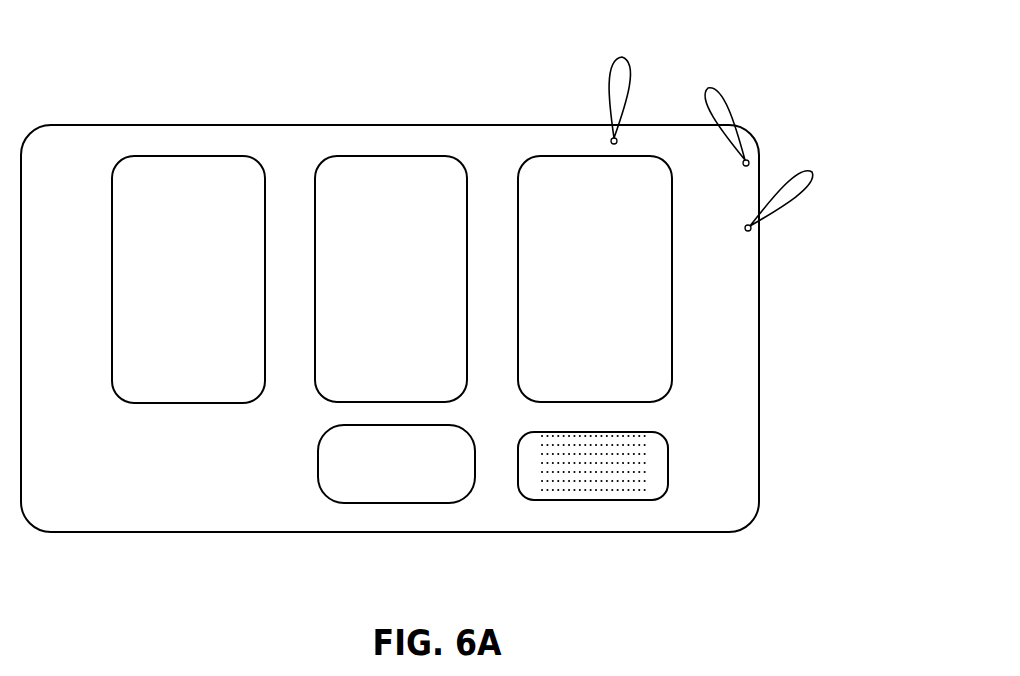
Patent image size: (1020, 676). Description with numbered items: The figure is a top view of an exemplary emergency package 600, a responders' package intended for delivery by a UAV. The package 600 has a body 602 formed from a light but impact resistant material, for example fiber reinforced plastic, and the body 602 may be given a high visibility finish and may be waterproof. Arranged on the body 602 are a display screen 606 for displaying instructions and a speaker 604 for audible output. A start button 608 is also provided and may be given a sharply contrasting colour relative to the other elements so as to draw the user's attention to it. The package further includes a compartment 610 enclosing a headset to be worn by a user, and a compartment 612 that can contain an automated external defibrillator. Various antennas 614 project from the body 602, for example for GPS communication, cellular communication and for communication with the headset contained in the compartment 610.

The emergency package 600 is at (469, 309).
The body 602 is at (390, 280).
The speaker 604 is at (588, 500).
The display screen 606 is at (225, 183).
The start button 608 is at (337, 487).
The compartment enclosing a headset 610 is at (358, 183).
The compartment for automated external defibrillator 612 is at (552, 183).
The antennas 614 is at (627, 80).